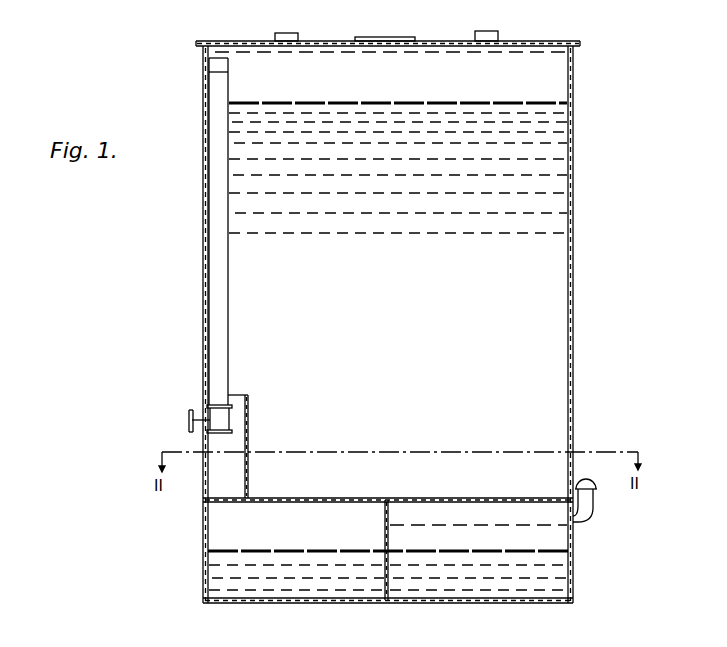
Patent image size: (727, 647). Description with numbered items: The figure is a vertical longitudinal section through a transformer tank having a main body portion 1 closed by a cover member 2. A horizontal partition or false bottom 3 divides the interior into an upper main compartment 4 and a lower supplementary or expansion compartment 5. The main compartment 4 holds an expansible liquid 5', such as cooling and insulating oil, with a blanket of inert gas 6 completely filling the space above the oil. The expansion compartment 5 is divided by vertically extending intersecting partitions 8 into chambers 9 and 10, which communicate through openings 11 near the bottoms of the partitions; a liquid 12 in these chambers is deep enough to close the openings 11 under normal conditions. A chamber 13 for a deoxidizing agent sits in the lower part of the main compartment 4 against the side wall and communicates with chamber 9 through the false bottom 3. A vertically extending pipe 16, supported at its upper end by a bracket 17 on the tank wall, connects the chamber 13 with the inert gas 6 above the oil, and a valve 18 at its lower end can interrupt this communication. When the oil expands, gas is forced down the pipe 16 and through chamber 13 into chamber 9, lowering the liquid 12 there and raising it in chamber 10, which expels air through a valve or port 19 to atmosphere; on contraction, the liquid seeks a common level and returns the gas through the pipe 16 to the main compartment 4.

The main body portion 1 is at (573, 290).
The cover member 2 is at (520, 41).
The partition or false bottom 3 is at (436, 498).
The main compartment 4 is at (395, 310).
The supplementary or expansion compartment 5 is at (388, 490).
The expansible liquid 5' is at (579, 140).
The inert gas 6 is at (545, 84).
The partitions 8 is at (393, 518).
The chamber 9 is at (271, 539).
The chamber 10 is at (479, 512).
The openings 11 is at (378, 601).
The liquid 12 is at (338, 557).
The chamber 13 is at (227, 475).
The pipe 16 is at (222, 306).
The bracket 17 is at (212, 66).
The valve 18 is at (214, 421).
The valve or port 19 is at (587, 504).